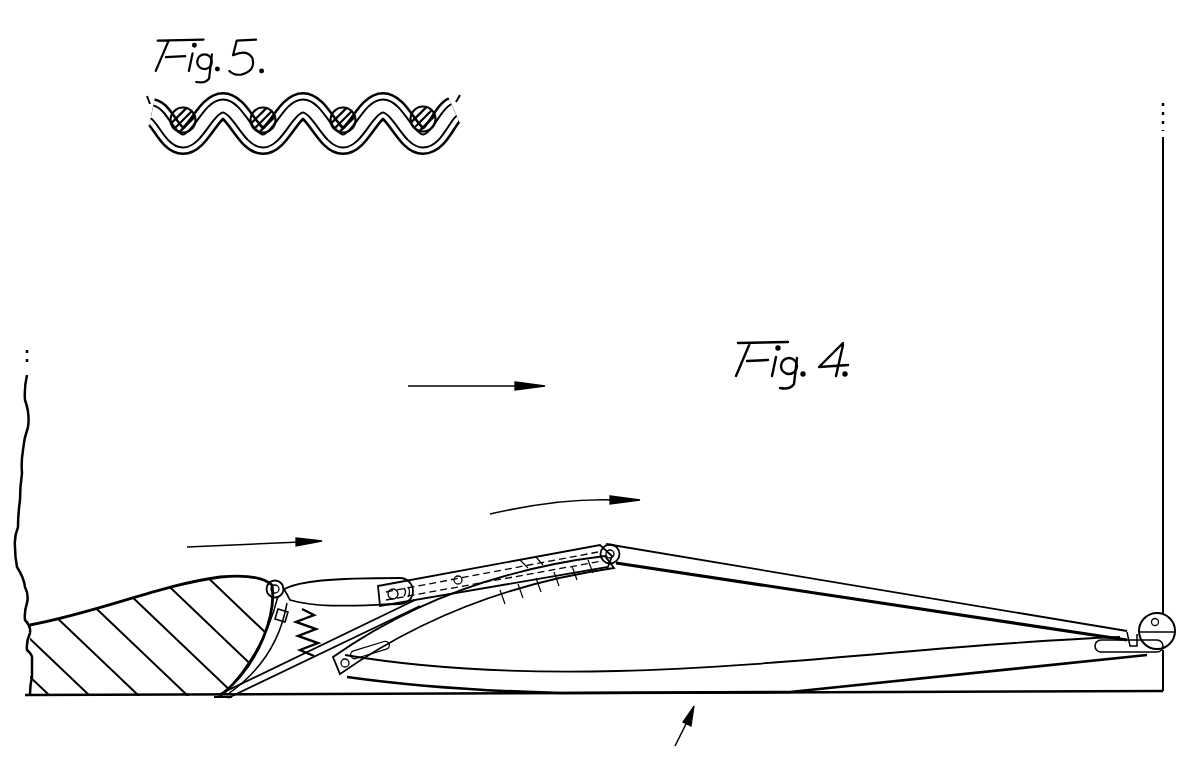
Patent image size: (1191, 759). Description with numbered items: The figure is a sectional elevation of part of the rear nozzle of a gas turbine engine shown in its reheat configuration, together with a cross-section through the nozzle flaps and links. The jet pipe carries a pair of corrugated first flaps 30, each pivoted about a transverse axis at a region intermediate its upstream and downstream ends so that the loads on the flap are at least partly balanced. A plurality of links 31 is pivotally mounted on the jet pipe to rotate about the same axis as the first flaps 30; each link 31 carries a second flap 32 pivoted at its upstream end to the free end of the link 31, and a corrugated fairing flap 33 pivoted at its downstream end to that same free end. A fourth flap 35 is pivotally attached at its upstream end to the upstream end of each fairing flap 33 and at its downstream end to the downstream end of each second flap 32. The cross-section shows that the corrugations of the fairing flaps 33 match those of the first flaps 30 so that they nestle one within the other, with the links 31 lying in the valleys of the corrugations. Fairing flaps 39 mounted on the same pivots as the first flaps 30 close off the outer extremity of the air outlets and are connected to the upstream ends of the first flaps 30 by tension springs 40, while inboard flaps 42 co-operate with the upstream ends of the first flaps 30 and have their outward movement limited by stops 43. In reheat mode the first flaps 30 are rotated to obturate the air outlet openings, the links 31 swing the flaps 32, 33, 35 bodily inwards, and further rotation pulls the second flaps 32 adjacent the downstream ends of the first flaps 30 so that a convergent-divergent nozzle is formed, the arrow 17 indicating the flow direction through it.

In FIG. 4, the direction of travel arrow 17 is at (695, 732).
In FIG. 5, the first flaps 30 is at (228, 104).
In FIG. 4, the first flaps 30 is at (487, 574).
In FIG. 5, the links 31 is at (340, 107).
In FIG. 4, the links 31 is at (531, 576).
In FIG. 4, the second flaps 32 is at (716, 568).
In FIG. 5, the corrugated fairing flaps 33 is at (425, 158).
In FIG. 4, the corrugated fairing flaps 33 is at (487, 598).
In FIG. 4, the fourth flap 35 is at (618, 687).
In FIG. 4, the fairing flaps 39 is at (282, 688).
In FIG. 4, the tension springs 40 is at (235, 693).
In FIG. 4, the flaps 42 is at (312, 586).
In FIG. 4, the stops 43 is at (276, 586).